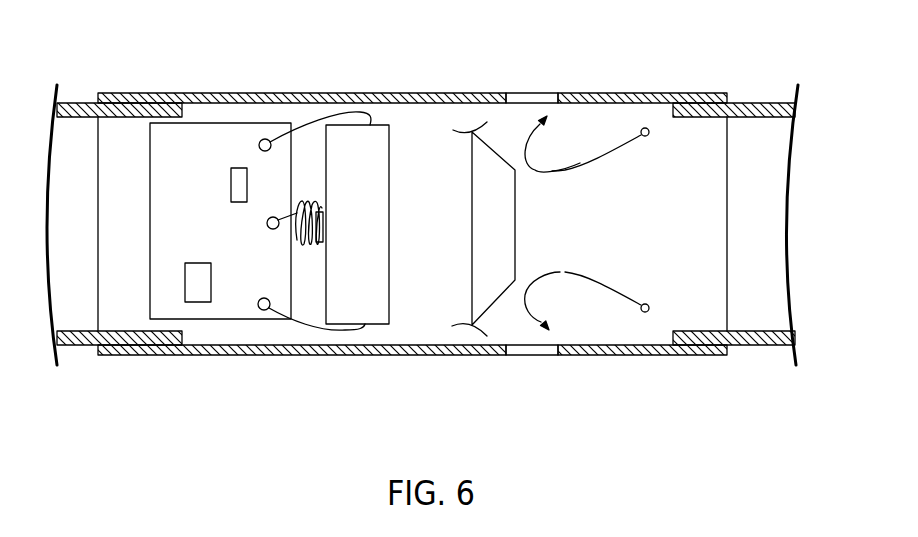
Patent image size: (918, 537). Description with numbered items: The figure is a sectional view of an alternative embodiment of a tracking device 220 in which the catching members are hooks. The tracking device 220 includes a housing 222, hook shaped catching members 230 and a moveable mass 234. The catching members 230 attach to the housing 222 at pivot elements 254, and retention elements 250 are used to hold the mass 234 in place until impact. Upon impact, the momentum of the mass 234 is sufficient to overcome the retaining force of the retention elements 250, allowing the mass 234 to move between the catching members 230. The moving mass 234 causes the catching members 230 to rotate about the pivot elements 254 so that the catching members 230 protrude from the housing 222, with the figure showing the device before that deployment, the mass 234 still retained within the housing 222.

The tracking device 220 is at (247, 48).
The housing 222 is at (257, 355).
The hook shaped catching members 230 is at (580, 163).
The moveable mass 234 is at (576, 215).
The retention elements 250 is at (460, 130).
The pivot elements 254 is at (646, 126).